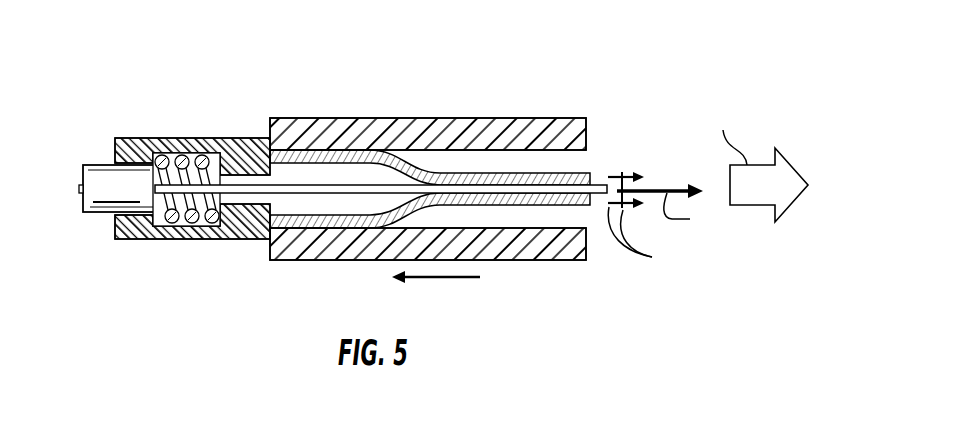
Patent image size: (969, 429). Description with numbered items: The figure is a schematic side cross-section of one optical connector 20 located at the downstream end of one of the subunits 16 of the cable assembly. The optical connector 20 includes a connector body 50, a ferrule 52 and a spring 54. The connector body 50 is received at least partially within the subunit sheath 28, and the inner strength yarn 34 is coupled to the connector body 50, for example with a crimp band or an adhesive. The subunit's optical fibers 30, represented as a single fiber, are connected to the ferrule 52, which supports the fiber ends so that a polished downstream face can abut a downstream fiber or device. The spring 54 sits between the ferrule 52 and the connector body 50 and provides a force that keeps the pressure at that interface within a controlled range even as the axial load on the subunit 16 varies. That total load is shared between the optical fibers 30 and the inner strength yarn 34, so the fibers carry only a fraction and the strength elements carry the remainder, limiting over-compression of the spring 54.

The subunit 16 is at (578, 78).
The optical connector 20 is at (124, 80).
The subunit sheath 28 is at (356, 126).
The optical fibers 30 is at (513, 194).
The inner strength yarn 34 is at (571, 177).
The connector body 50 is at (176, 148).
The ferrule 52 is at (100, 178).
The spring 54 is at (172, 241).